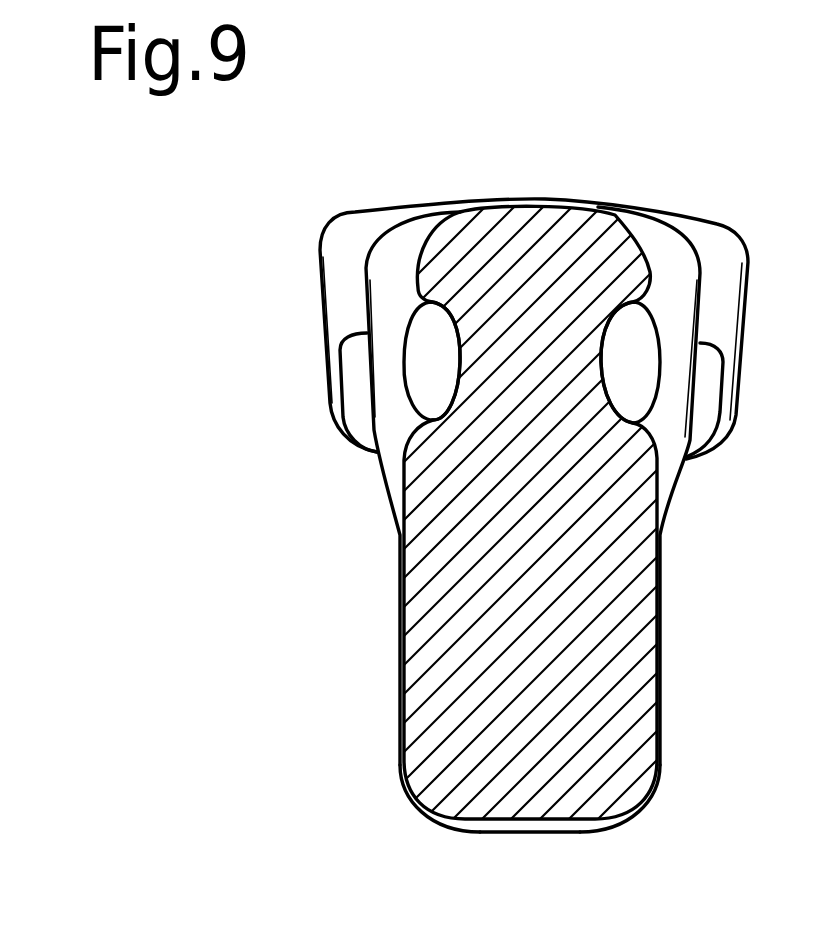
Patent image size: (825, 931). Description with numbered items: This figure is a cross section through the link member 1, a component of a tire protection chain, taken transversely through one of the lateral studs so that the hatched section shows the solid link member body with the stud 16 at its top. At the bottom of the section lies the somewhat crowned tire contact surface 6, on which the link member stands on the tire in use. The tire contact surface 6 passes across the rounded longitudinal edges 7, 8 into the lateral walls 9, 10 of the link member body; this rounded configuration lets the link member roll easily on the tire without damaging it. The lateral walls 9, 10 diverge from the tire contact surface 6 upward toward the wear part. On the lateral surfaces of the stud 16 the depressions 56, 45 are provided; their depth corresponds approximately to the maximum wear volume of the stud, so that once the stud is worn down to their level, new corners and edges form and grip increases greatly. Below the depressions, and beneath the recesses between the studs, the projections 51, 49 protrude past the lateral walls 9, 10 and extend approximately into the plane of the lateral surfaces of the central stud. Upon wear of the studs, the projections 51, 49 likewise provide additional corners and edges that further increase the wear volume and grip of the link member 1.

The link member 1 is at (727, 212).
The lateral stud 16 is at (570, 210).
The depression 56 is at (437, 352).
The depression 45 is at (607, 356).
The projection 51 is at (358, 385).
The projection 49 is at (705, 413).
The lateral wall 9 is at (402, 654).
The lateral wall 10 is at (643, 668).
The rounded longitudinal edge 7 is at (407, 785).
The rounded longitudinal edge 8 is at (648, 795).
The tire contact surface 6 is at (518, 824).